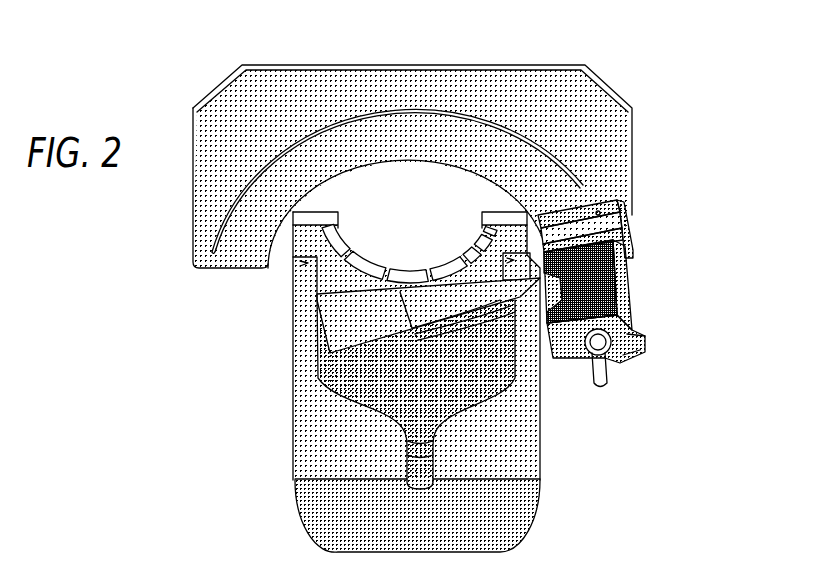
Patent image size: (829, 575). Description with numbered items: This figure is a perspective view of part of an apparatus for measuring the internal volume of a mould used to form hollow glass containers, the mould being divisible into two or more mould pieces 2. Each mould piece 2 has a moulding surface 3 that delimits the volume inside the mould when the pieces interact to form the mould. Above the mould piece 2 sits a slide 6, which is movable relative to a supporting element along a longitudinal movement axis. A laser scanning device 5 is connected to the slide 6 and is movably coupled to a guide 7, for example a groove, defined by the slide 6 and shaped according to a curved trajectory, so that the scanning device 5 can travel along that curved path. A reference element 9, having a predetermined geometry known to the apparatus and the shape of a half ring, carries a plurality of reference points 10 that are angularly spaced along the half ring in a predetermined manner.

The mould piece 2 is at (515, 458).
The moulding surface 3 is at (462, 383).
The laser scanning device 5 is at (597, 290).
The slide 6 is at (540, 100).
The guide 7 is at (590, 188).
The reference element 9 is at (354, 279).
The reference points 10 is at (352, 250).